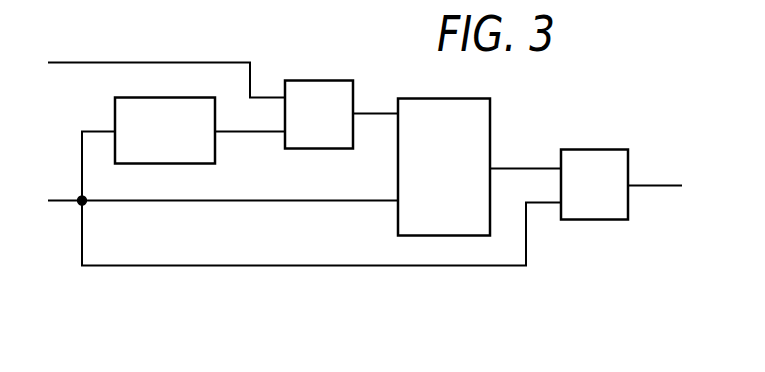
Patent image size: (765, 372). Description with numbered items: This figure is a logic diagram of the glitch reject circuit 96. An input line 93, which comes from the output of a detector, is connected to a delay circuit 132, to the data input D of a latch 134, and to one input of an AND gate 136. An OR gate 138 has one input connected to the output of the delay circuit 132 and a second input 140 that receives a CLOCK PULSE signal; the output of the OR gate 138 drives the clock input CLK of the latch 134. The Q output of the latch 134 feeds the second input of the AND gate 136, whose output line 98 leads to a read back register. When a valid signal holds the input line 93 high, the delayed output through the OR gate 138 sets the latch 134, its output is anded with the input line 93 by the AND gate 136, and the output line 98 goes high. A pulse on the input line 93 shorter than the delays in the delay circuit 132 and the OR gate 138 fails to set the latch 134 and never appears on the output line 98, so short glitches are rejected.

The input line 93 is at (78, 200).
The glitch reject circuit 96 is at (527, 127).
The output line 98 is at (645, 185).
The delay circuit 132 is at (115, 110).
The latch 134 is at (452, 97).
The AND gate 136 is at (612, 149).
The OR gate 138 is at (343, 80).
The second input 140 is at (268, 46).